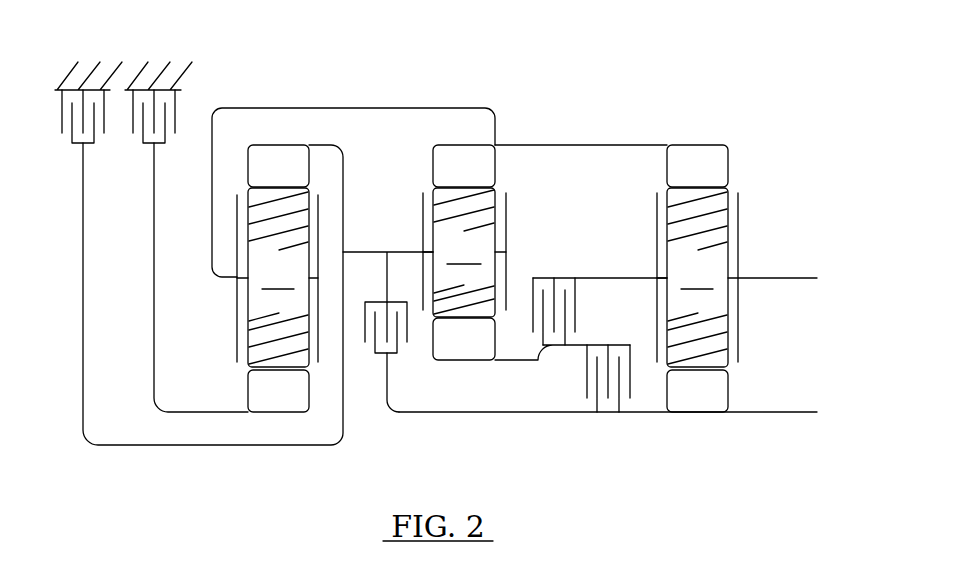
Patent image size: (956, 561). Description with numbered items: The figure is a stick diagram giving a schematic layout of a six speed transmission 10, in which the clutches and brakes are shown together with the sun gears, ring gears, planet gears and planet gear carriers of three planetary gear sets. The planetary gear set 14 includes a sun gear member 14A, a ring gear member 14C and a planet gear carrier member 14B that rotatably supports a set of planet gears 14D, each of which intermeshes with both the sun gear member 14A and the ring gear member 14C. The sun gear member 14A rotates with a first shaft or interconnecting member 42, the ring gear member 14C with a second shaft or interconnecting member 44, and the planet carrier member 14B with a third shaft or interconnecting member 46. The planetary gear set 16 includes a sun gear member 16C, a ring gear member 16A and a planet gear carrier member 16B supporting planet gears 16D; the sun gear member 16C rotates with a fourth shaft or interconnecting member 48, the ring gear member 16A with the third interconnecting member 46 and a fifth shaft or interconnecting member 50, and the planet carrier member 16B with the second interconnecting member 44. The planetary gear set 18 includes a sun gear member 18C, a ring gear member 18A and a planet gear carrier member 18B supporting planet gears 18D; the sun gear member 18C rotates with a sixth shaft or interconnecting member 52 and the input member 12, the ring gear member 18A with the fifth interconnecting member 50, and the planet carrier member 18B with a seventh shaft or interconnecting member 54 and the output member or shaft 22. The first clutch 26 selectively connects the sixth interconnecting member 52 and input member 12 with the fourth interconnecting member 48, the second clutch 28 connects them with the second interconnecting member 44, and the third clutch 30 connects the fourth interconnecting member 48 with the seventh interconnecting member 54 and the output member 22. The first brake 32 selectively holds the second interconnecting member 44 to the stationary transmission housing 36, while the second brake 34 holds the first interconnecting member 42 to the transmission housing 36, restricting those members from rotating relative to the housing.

The six speed transmission 10 is at (747, 96).
The input member 12 is at (793, 414).
The planetary gear set 14 is at (293, 428).
The sun gear member 14A is at (270, 390).
The planet gear carrier member 14B is at (237, 315).
The ring gear member 14C is at (278, 163).
The planet gears 14D is at (277, 277).
The planetary gear set 16 is at (466, 382).
The ring gear member 16A is at (450, 168).
The planet gear carrier member 16B is at (517, 218).
The sun gear member 16C is at (458, 347).
The planet gears 16D is at (464, 252).
The planetary gear set 18 is at (715, 432).
The ring gear member 18A is at (685, 157).
The planet gear carrier member 18B is at (738, 220).
The sun gear member 18C is at (685, 395).
The planet gears 18D is at (692, 277).
The output member or shaft 22 is at (793, 283).
The first clutch 26 is at (585, 382).
The second clutch 28 is at (365, 328).
The third clutch 30 is at (532, 298).
The first brake 32 is at (62, 123).
The second brake 34 is at (133, 123).
The transmission housing 36 is at (68, 73).
The first shaft or interconnecting member 42 is at (155, 297).
The second shaft or interconnecting member 44 is at (367, 249).
The third shaft or interconnecting member 46 is at (378, 107).
The fourth shaft or interconnecting member 48 is at (512, 361).
The fifth shaft or interconnecting member 50 is at (583, 143).
The sixth shaft or interconnecting member 52 is at (412, 413).
The seventh shaft or interconnecting member 54 is at (609, 277).